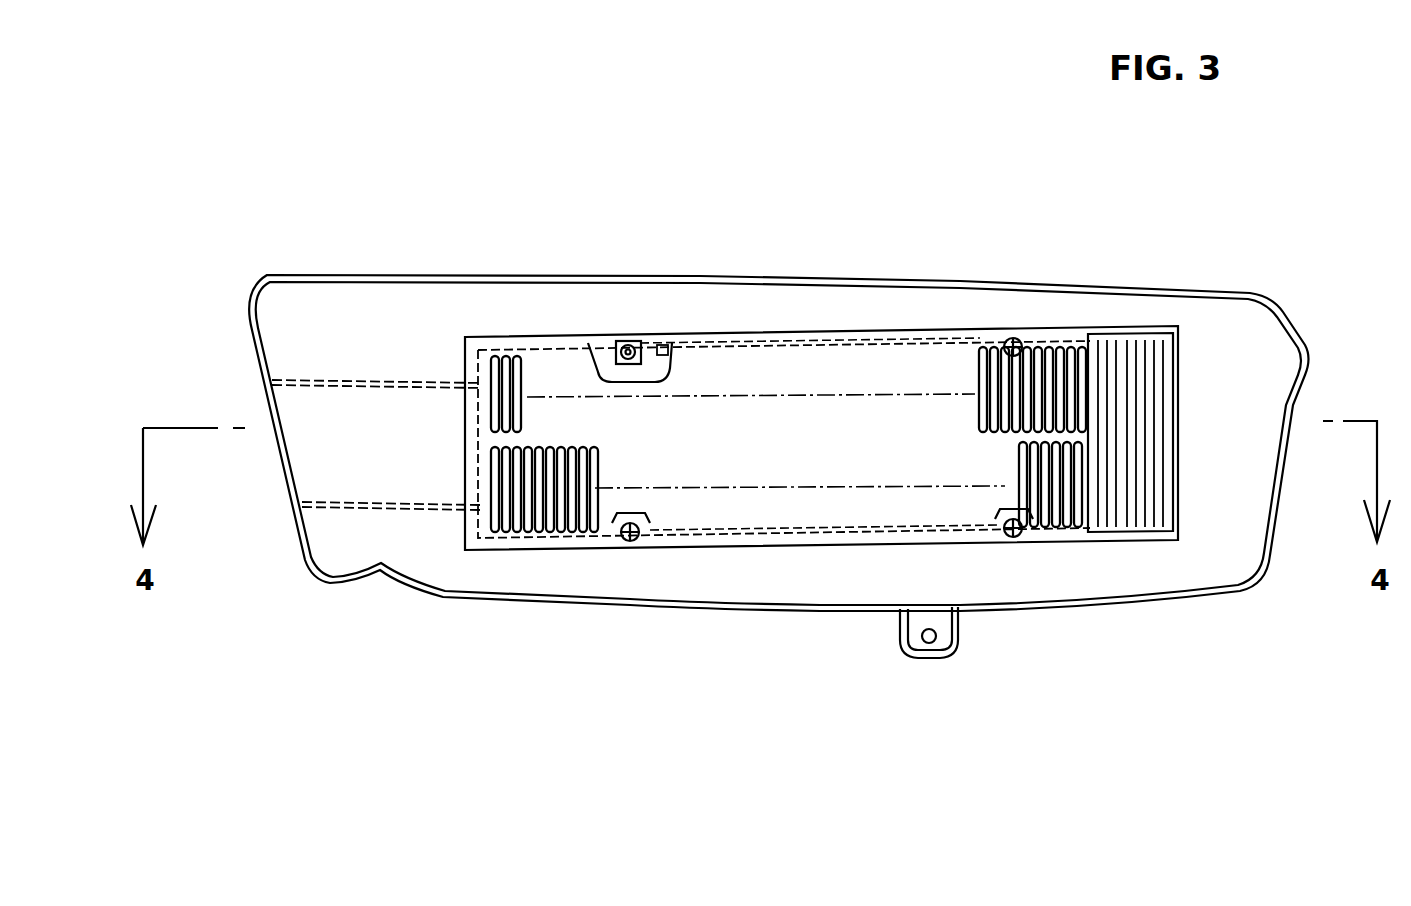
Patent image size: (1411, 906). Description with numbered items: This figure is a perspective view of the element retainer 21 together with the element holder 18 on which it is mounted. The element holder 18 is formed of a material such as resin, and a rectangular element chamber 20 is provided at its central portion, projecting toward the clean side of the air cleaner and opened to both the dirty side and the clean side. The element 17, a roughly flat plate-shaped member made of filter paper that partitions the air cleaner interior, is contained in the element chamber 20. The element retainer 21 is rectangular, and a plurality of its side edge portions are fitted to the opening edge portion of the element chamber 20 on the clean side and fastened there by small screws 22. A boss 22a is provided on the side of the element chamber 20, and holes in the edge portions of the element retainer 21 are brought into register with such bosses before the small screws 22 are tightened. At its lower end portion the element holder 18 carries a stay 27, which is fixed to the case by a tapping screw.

The element 17 is at (1120, 345).
The element holder 18 is at (933, 278).
The element chamber 20 is at (596, 350).
The element retainer 21 is at (747, 400).
The small screws 22 is at (1010, 340).
The boss 22a is at (628, 345).
The stay 27 is at (910, 643).